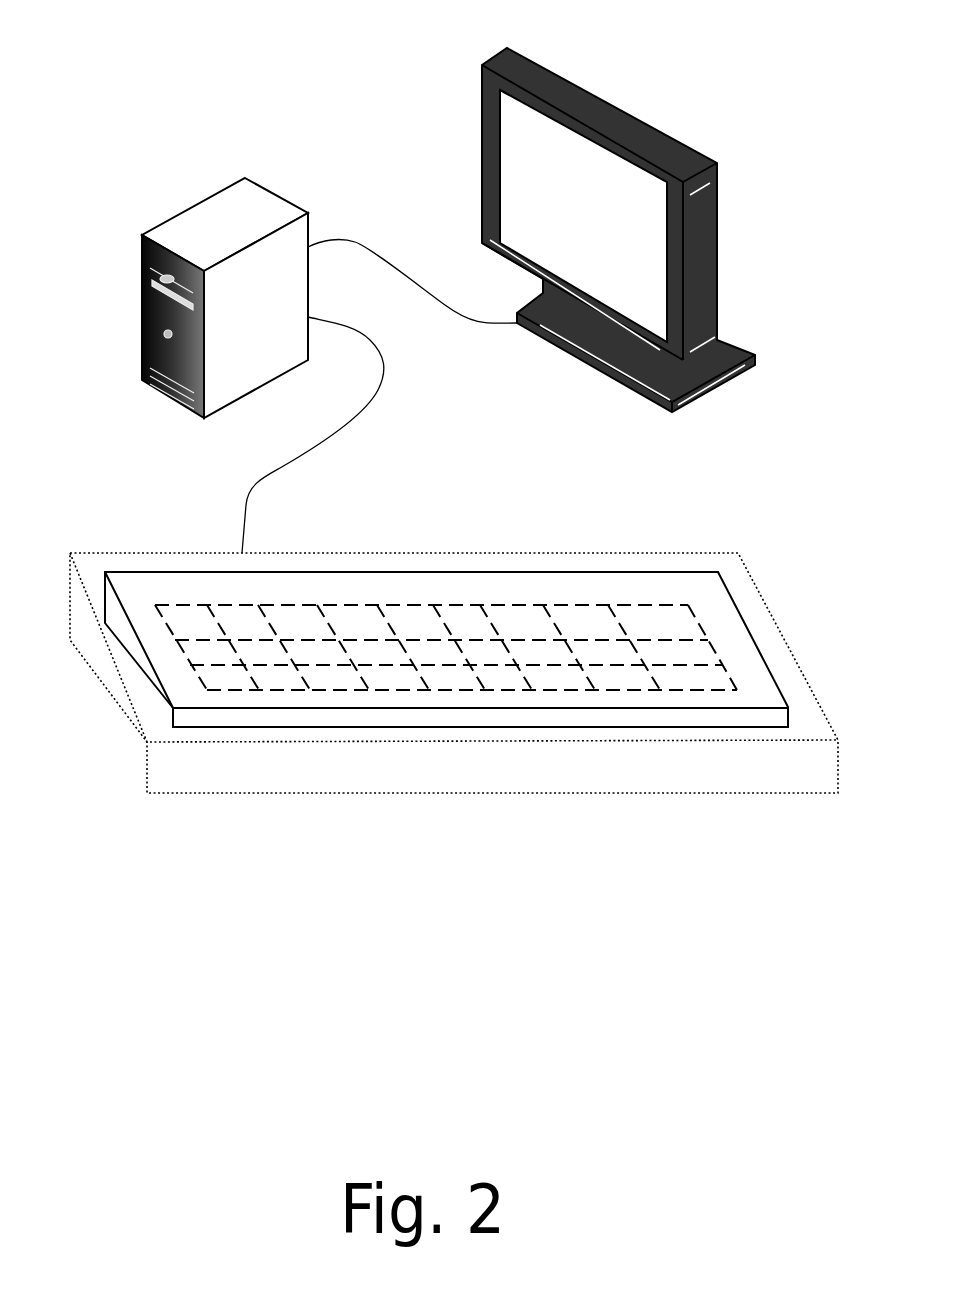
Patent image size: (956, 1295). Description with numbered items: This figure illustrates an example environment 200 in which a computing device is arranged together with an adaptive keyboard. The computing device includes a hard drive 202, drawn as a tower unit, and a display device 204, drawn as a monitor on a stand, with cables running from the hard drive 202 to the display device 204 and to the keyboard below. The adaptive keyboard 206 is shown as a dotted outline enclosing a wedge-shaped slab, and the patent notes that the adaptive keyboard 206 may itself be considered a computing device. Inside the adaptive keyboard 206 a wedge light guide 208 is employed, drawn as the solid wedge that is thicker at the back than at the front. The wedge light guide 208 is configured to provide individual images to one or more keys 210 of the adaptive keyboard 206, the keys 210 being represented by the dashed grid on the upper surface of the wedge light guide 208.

The environment 200 is at (185, 54).
The hard drive 202 is at (255, 213).
The display device 204 is at (508, 48).
The adaptive keyboard 206 is at (585, 553).
The wedge light guide 208 is at (330, 572).
The keys 210 is at (702, 678).